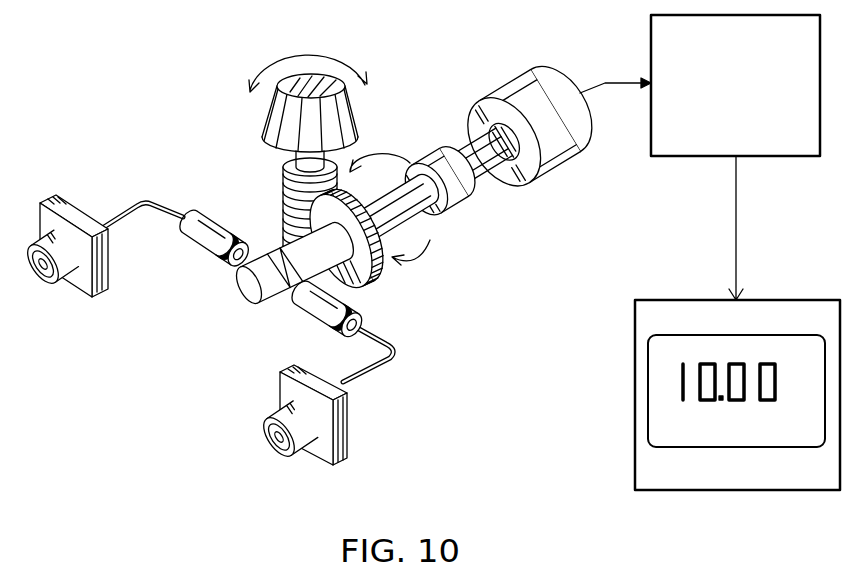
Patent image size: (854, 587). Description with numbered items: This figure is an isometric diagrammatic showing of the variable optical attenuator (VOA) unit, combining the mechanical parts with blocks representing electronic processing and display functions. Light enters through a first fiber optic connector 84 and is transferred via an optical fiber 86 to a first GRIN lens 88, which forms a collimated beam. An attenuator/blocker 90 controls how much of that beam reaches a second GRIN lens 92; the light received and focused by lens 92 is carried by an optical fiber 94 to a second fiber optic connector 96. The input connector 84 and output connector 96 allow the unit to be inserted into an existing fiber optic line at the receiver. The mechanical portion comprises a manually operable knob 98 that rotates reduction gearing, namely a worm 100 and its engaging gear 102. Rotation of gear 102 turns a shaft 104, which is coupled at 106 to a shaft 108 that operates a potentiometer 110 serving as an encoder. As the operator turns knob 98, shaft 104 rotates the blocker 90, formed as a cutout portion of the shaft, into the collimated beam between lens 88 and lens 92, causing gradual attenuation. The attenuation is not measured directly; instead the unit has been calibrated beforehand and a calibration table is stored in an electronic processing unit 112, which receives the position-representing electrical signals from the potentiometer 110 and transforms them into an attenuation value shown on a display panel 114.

The first fiber optic connector 84 is at (82, 277).
The optical fiber 86 is at (113, 221).
The first GRIN lens 88 is at (187, 243).
The attenuator/blocker 90 is at (221, 291).
The second GRIN lens 92 is at (322, 325).
The optical fiber 94 is at (373, 373).
The second fiber optic connector 96 is at (320, 450).
The manually operable knob 98 is at (270, 123).
The worm 100 is at (281, 204).
The gear 102 is at (377, 280).
The shaft 104 is at (376, 168).
The coupling 106 is at (451, 202).
The shaft 108 is at (461, 148).
The potentiometer 110 is at (562, 96).
The electronic processing unit 112 is at (710, 158).
The display panel 114 is at (635, 357).